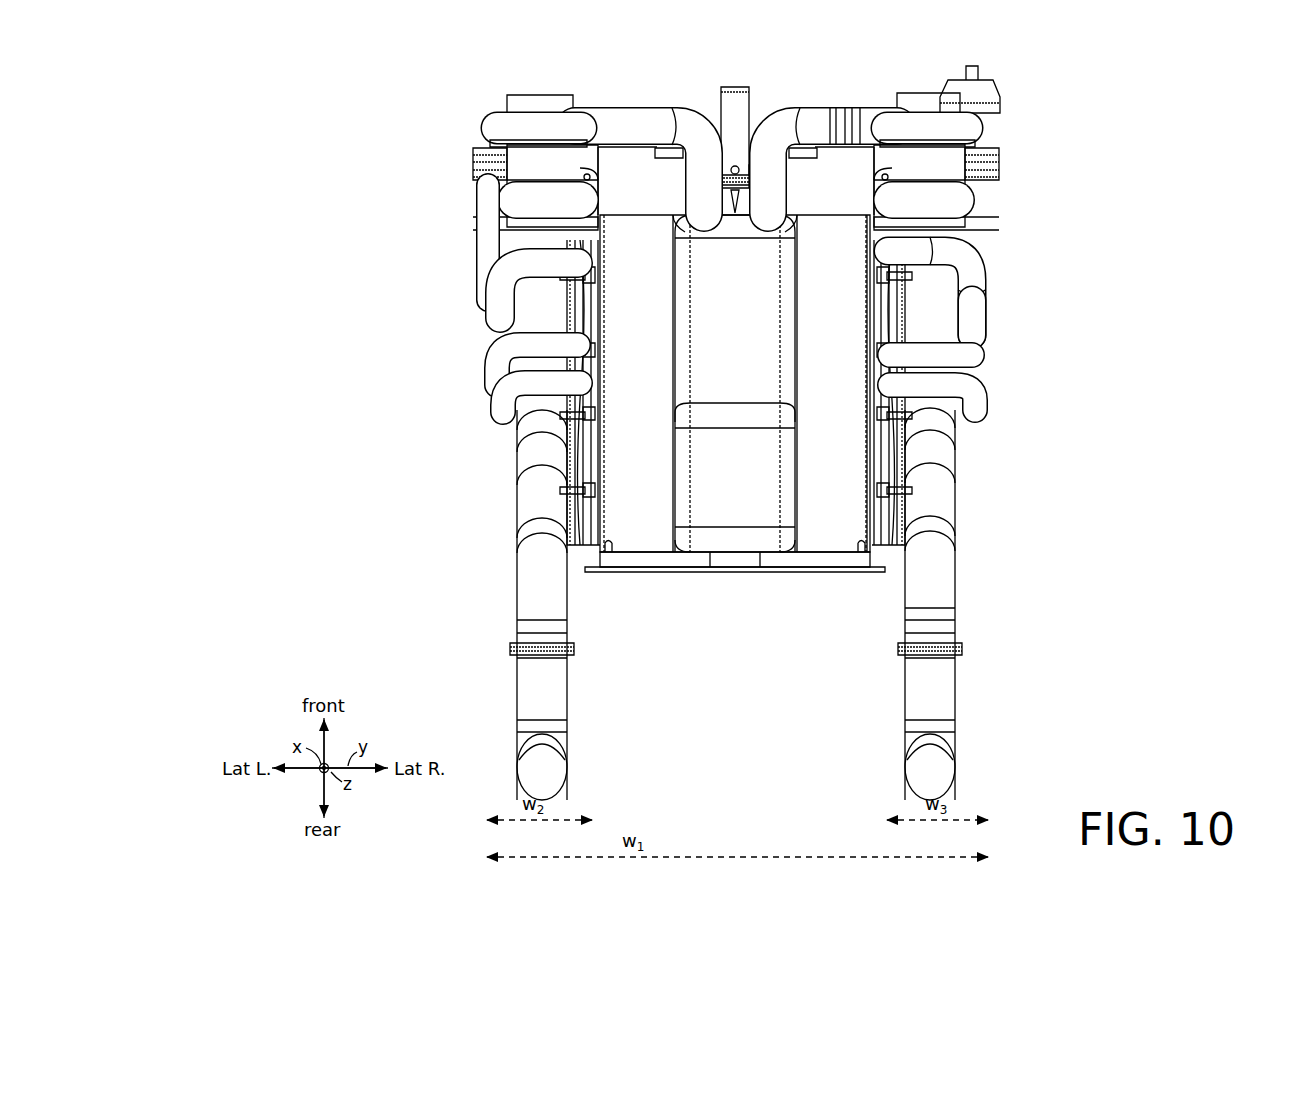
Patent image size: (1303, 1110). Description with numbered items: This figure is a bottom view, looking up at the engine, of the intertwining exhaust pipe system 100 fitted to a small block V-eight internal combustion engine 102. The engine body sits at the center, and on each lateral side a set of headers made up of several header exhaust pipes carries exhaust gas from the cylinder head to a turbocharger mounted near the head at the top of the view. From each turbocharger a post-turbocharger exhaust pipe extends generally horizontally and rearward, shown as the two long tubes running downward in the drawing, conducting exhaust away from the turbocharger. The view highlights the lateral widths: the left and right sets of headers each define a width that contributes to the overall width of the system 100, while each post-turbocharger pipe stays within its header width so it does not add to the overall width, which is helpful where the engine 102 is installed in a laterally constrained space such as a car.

The system 100 is at (286, 66).
The internal combustion engine 102 is at (782, 569).